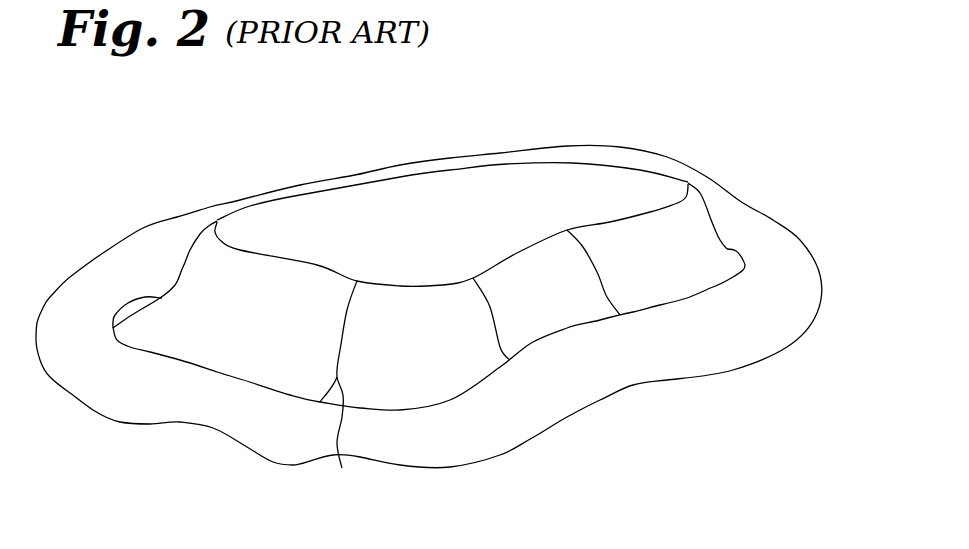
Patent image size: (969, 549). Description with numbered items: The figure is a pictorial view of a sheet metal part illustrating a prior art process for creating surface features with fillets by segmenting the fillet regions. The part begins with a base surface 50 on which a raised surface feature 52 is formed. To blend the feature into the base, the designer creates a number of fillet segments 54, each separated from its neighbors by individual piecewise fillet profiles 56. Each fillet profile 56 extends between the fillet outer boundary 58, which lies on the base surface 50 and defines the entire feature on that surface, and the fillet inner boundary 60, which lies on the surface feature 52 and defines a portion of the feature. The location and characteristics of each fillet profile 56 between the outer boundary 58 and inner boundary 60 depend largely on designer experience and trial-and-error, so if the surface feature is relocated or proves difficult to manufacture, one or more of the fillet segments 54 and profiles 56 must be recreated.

The base surface 50 is at (665, 160).
The surface feature 52 is at (512, 173).
The fillet segments 54 is at (583, 293).
The piecewise fillet profiles 56 is at (429, 386).
The fillet outer boundary 58 is at (218, 370).
The fillet inner boundary 60 is at (257, 207).